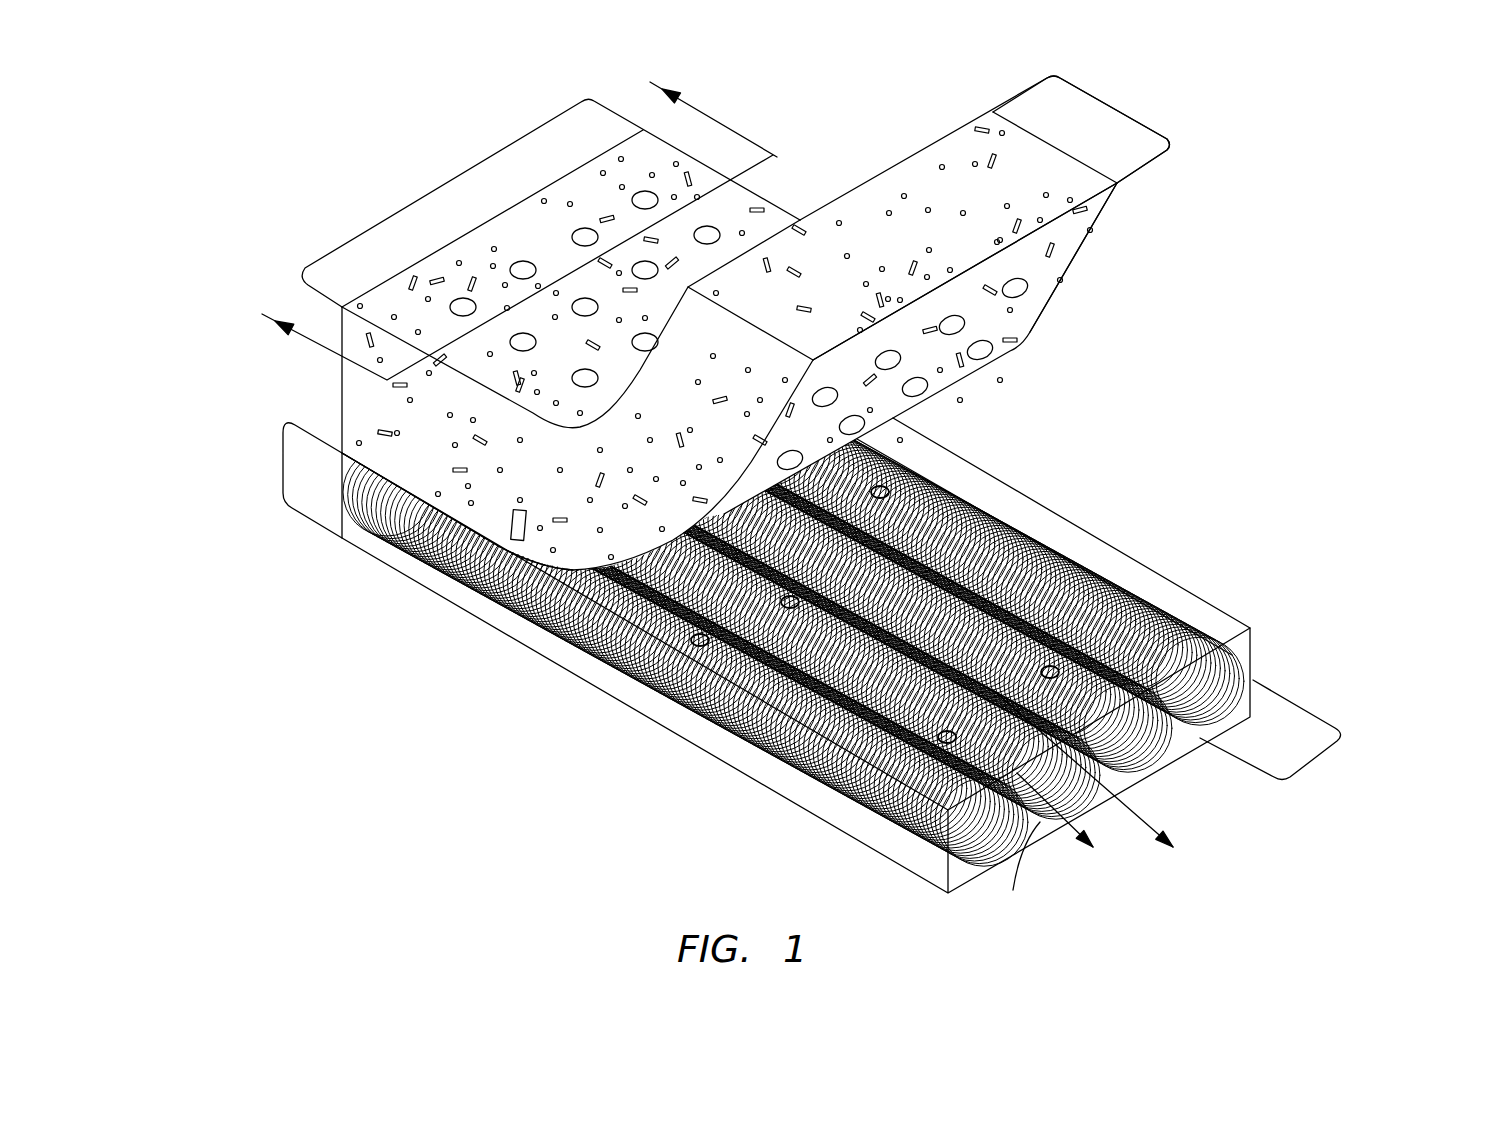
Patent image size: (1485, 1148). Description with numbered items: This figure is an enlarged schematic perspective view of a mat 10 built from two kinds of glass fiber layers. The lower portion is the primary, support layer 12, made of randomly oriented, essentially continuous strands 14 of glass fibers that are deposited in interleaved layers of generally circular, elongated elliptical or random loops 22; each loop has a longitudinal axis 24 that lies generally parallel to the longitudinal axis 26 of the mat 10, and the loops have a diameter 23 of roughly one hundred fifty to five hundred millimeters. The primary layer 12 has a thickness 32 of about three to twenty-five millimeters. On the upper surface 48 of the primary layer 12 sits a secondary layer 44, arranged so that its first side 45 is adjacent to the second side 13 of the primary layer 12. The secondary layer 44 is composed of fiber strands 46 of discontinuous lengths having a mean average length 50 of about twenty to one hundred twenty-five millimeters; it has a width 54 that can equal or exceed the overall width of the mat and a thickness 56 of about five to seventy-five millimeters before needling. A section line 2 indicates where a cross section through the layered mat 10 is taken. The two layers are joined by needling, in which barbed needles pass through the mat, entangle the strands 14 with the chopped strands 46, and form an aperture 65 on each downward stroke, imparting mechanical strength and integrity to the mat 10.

The section line 2- 2 is at (510, 218).
The mat 10 is at (823, 492).
The primary, support layer 12 is at (823, 600).
The second side 13 is at (1082, 552).
The strands 14 is at (1237, 632).
The loops 22 is at (1013, 874).
The diameter 23 is at (1318, 762).
The longitudinal axis 24 is at (1047, 828).
The longitudinal axis 26 is at (1127, 816).
The thickness 32 is at (283, 472).
The secondary layer 44 is at (734, 382).
The first side 45 is at (1082, 237).
The fiber strands 46 is at (382, 433).
The upper surface 48 is at (1147, 580).
The mean average length 50 is at (518, 541).
The width 54 is at (445, 181).
The thickness 56 is at (1114, 116).
The aperture 65 is at (1022, 287).